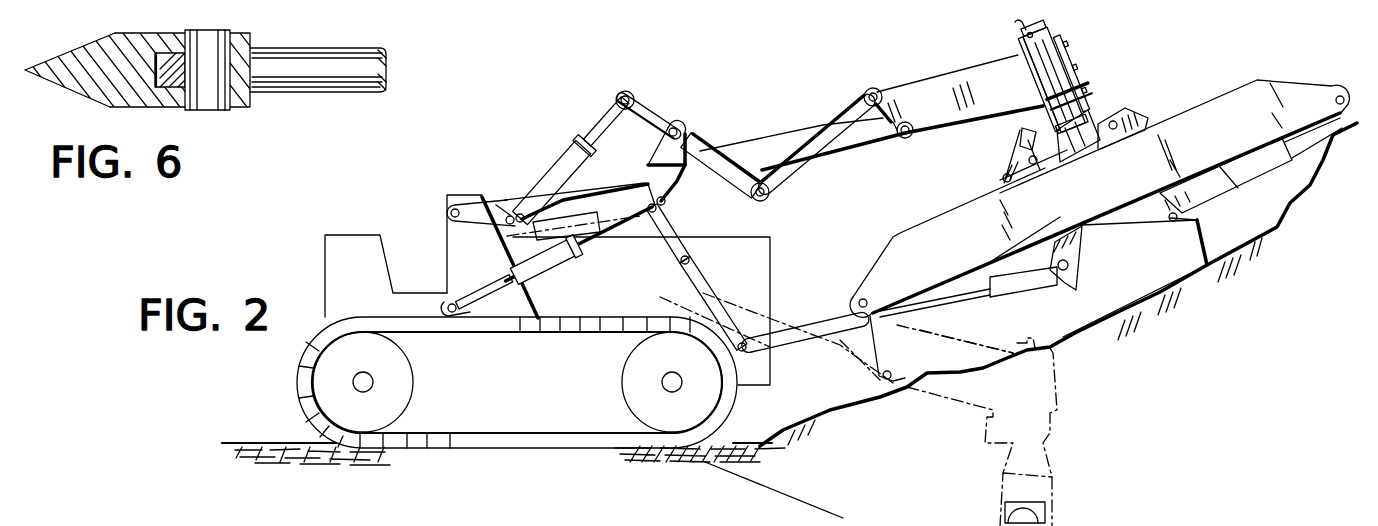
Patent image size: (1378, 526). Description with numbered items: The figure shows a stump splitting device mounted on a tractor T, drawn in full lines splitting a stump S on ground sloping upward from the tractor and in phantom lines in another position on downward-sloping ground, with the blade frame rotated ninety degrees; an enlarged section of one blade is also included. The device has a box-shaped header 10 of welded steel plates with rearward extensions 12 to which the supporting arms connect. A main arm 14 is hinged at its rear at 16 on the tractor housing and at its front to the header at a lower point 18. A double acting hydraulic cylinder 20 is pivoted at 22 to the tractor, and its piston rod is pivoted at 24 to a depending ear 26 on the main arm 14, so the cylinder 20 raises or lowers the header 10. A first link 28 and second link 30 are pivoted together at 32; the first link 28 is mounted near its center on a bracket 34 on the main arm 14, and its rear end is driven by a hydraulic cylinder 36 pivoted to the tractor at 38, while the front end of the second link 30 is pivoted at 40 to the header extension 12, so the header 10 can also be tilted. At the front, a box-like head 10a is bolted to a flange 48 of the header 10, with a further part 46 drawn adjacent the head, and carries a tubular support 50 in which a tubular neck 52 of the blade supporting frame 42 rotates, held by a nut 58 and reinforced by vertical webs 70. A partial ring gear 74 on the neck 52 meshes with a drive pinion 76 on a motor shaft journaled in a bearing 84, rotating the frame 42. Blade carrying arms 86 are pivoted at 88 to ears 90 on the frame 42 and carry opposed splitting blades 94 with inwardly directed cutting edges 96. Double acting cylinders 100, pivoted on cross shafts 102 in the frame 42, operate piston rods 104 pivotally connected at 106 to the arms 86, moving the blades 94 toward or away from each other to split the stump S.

In FIG. 2, the header 10 is at (930, 88).
In FIG. 2, the header extension 10a is at (1055, 62).
In FIG. 2, the rearward extensions 12 is at (902, 138).
In FIG. 2, the main arm 14 is at (765, 142).
In FIG. 2, the hinge mounting 16 is at (450, 214).
In FIG. 2, the lower hinge point 18 is at (904, 139).
In FIG. 2, the double acting hydraulic cylinder 20 is at (530, 270).
In FIG. 2, the pivot attachment 22 is at (450, 305).
In FIG. 2, the pivot connection 24 is at (664, 205).
In FIG. 2, the depending ear 26 is at (668, 190).
In FIG. 2, the first link 28 is at (675, 108).
In FIG. 2, the second link 30 is at (835, 118).
In FIG. 2, the pivot connection 32 is at (764, 198).
In FIG. 2, the bracket 34 is at (666, 150).
In FIG. 2, the double acting hydraulic cylinder 36 is at (572, 167).
In FIG. 2, the pivot attachment 38 is at (508, 217).
In FIG. 2, the pivot connection 40 is at (873, 82).
In FIG. 2, the blade supporting frame 42 is at (1210, 110).
In FIG. 2, the guide rail 46 is at (1018, 50).
In FIG. 2, the flange 48 is at (1005, 62).
In FIG. 2, the tubular support 50 is at (1062, 92).
In FIG. 2, the tubular neck 52 is at (1088, 116).
In FIG. 2, the nut 58 is at (1034, 36).
In FIG. 2, the vertical webs 70 is at (1092, 140).
In FIG. 2, the partial ring gear 74 is at (1072, 105).
In FIG. 2, the drive pinion 76 is at (1025, 147).
In FIG. 2, the bearing 84 is at (1022, 133).
In FIG. 2, the blade carrying arms 86 is at (1075, 225).
In FIG. 2, the pivot connection 88 is at (1028, 161).
In FIG. 2, the ears 90 is at (1003, 179).
In FIG. 6, the splitting blades 94 is at (138, 92).
In FIG. 6, the cutting edges 96 is at (30, 72).
In FIG. 2, the double acting cylinders 100 is at (965, 296).
In FIG. 2, the cross shafts 102 is at (860, 300).
In FIG. 6, the piston rods 104 is at (333, 83).
In FIG. 2, the piston rods 104 is at (1025, 272).
In FIG. 6, the pivot connection 106 is at (224, 110).
In FIG. 2, the tractor T is at (338, 232).
In FIG. 2, the stump S is at (1193, 243).